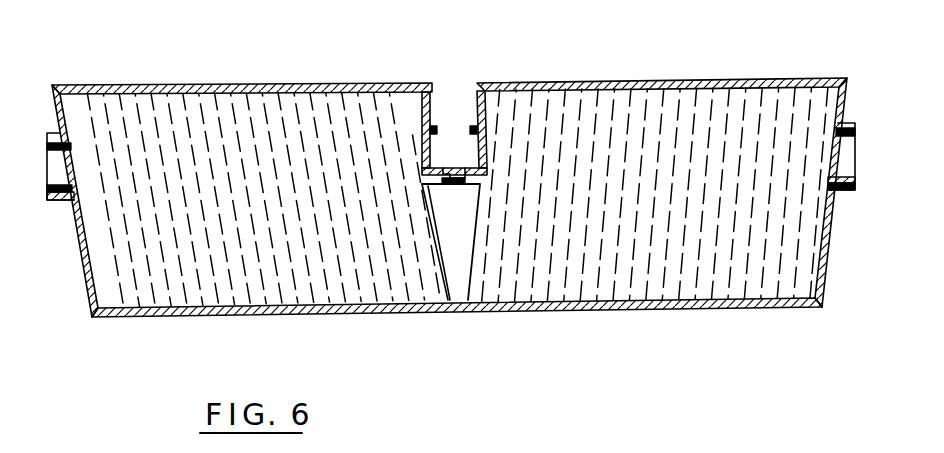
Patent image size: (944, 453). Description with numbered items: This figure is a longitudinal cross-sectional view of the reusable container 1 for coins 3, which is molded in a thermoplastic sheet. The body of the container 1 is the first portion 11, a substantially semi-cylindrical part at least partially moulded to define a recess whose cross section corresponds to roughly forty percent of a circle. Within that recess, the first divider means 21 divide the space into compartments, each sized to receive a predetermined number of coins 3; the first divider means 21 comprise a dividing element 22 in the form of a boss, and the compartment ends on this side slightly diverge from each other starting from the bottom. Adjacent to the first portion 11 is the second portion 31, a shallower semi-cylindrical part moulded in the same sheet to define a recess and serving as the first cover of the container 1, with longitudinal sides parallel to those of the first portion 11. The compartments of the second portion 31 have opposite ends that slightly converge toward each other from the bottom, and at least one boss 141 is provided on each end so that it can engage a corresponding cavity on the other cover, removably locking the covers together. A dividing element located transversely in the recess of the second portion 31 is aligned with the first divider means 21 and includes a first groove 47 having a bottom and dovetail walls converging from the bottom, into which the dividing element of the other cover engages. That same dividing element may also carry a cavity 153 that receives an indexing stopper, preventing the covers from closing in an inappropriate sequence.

The container 1 is at (467, 189).
The coins 3 is at (805, 110).
The second portion 31 is at (230, 84).
The first portion 11 is at (643, 303).
The first groove 47 is at (463, 82).
The boss 141 is at (473, 131).
The cavity 153 is at (465, 177).
The first divider means 21 is at (461, 252).
The dividing element 22 is at (447, 300).